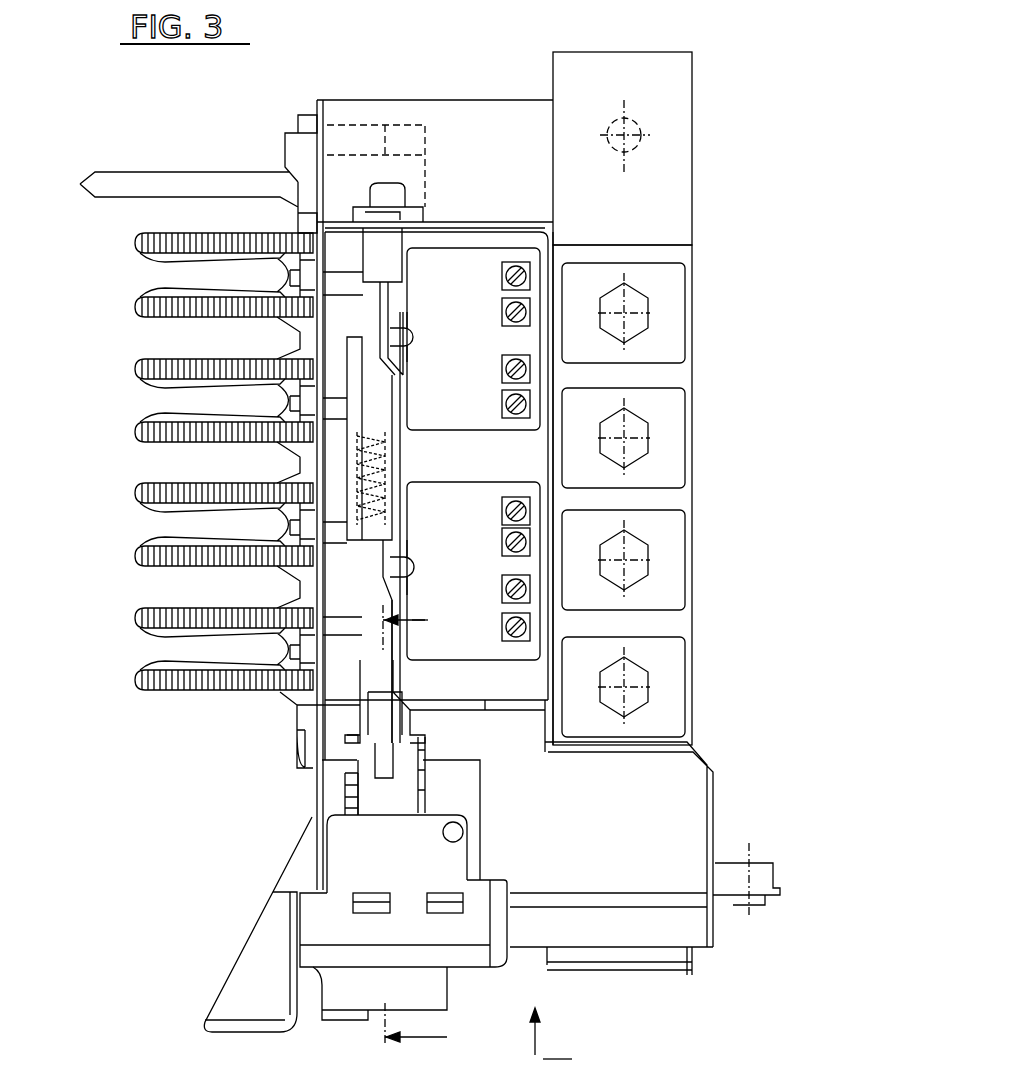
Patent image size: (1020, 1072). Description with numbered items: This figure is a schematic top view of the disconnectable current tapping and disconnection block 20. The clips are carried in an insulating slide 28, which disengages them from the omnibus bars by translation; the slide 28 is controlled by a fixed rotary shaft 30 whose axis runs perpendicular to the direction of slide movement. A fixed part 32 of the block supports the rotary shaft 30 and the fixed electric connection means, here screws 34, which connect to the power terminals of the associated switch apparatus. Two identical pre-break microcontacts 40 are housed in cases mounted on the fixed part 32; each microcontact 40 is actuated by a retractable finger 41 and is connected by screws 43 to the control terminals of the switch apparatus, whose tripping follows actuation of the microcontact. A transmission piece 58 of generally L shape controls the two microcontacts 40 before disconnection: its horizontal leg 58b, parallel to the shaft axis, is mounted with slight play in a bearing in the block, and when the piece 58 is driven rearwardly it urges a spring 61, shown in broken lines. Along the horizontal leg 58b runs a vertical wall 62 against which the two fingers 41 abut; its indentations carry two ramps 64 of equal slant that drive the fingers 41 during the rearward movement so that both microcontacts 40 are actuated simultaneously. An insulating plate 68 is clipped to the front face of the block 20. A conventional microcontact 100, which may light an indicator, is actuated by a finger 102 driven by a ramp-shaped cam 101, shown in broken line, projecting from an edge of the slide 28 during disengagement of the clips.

The current tapping and disconnection block 20 is at (236, 810).
The slide 28 is at (223, 688).
The rotary shaft 30 is at (410, 193).
The fixed part 32 is at (698, 300).
The screws 34 is at (638, 327).
The pre-break microcontact 40 is at (483, 338).
The retractable finger 41 is at (410, 337).
The screws 43 is at (502, 404).
The transmission piece 58 is at (408, 722).
The horizontal leg 58b is at (388, 263).
The spring 61 is at (383, 467).
The vertical wall 62 is at (395, 650).
The ramps 64 is at (400, 347).
The insulating plate 68 is at (520, 945).
The microcontact 100 is at (647, 215).
The ramp shaped cam 101 is at (408, 132).
The finger 102 is at (645, 133).